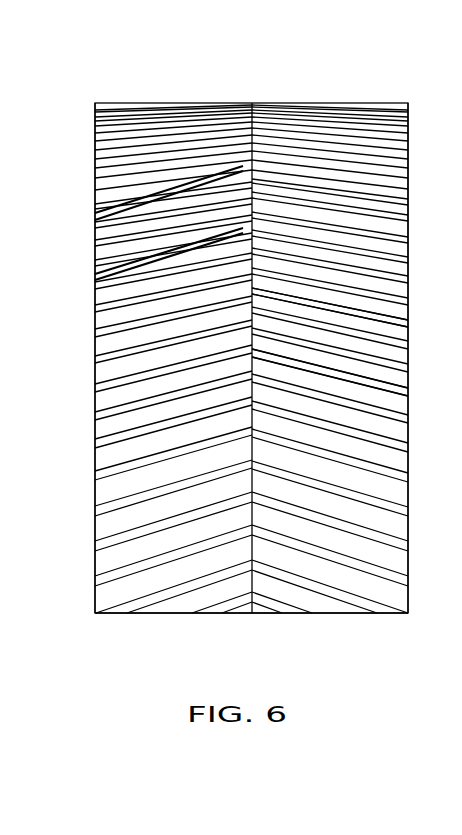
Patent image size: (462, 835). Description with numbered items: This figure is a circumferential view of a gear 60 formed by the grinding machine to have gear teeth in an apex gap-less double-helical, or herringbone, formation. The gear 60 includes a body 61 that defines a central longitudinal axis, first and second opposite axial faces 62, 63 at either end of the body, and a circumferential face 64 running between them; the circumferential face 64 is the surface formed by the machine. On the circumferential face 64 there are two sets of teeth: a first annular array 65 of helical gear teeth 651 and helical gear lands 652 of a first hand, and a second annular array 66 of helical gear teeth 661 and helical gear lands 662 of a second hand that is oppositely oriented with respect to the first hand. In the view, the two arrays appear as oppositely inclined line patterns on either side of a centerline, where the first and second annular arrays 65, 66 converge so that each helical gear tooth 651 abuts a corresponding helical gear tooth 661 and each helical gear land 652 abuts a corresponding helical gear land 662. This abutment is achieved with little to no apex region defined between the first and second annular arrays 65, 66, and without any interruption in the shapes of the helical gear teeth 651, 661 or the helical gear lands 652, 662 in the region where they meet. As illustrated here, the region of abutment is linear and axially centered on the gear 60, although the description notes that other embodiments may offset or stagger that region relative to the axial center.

The gear 60 is at (259, 102).
The body 61 is at (252, 614).
The first axial face 62 is at (95, 585).
The second axial face 63 is at (408, 585).
The circumferential face 64 is at (260, 418).
The first annular array 65 is at (252, 97).
The second annular array 66 is at (405, 97).
The helical gear tooth 651 is at (95, 215).
The helical gear land 652 is at (95, 276).
The helical gear tooth 661 is at (408, 362).
The helical gear land 662 is at (408, 430).